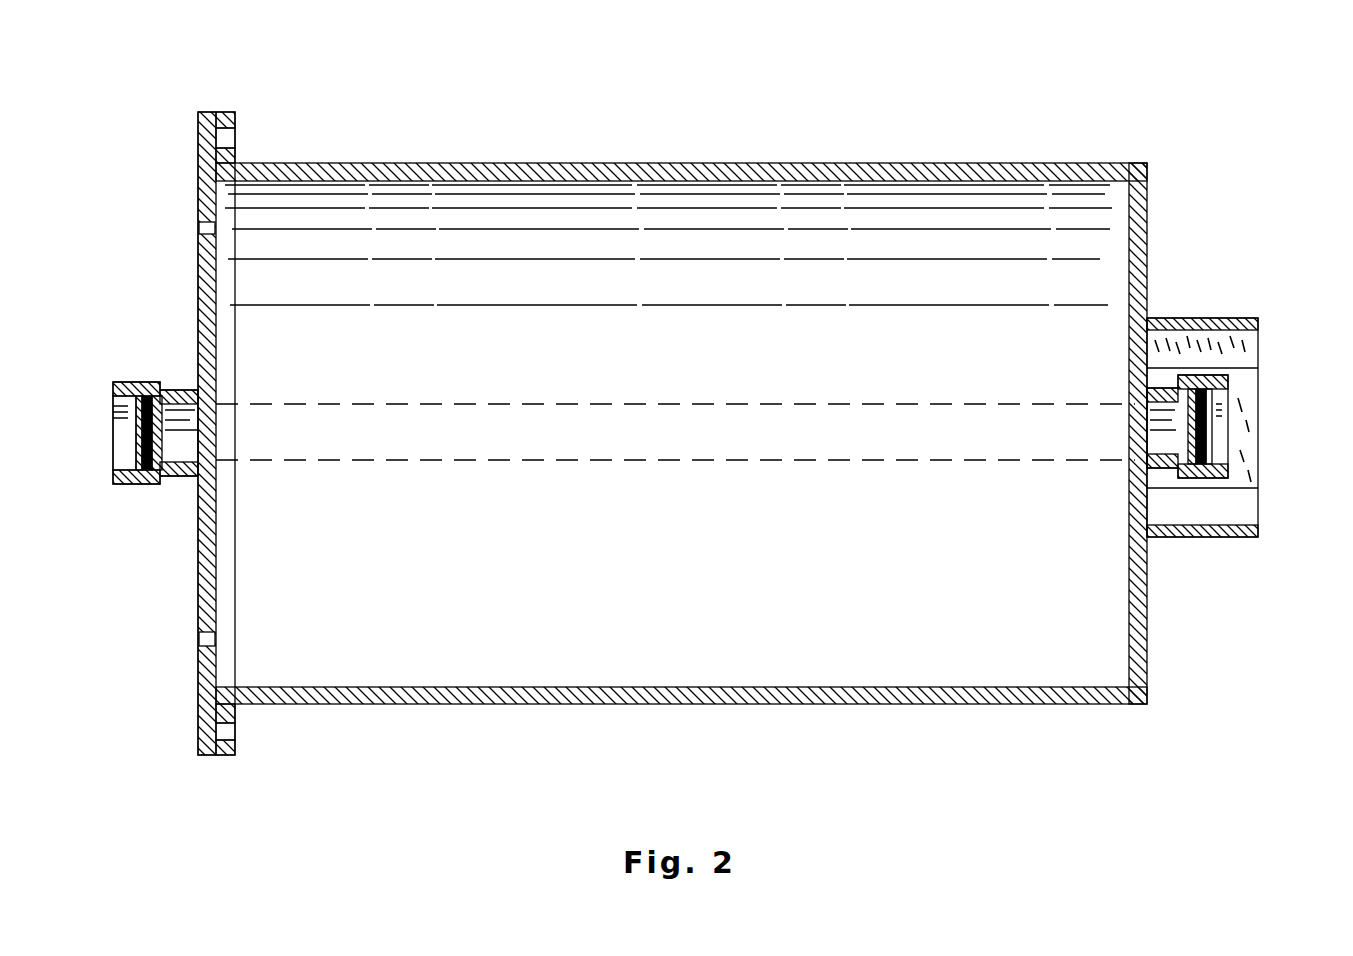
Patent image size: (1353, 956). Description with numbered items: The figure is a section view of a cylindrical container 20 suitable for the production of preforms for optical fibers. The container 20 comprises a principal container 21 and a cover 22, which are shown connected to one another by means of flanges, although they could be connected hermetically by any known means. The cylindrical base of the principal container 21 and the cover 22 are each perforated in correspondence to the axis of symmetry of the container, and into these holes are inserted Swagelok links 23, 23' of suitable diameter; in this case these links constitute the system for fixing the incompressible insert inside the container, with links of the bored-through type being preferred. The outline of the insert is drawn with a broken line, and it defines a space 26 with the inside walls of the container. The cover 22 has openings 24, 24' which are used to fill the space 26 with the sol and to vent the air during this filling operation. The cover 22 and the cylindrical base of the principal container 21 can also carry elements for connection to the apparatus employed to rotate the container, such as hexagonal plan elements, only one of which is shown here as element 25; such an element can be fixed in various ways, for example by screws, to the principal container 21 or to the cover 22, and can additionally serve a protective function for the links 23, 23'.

The container 20 is at (846, 141).
The principal container 21 is at (612, 163).
The cover 22 is at (198, 316).
The Swagelok link 23 is at (110, 418).
The Swagelok link 23' is at (1243, 385).
The opening 24 is at (168, 195).
The opening 24' is at (171, 692).
The hexagonal plan element 25 is at (1230, 318).
The space 26 is at (643, 616).